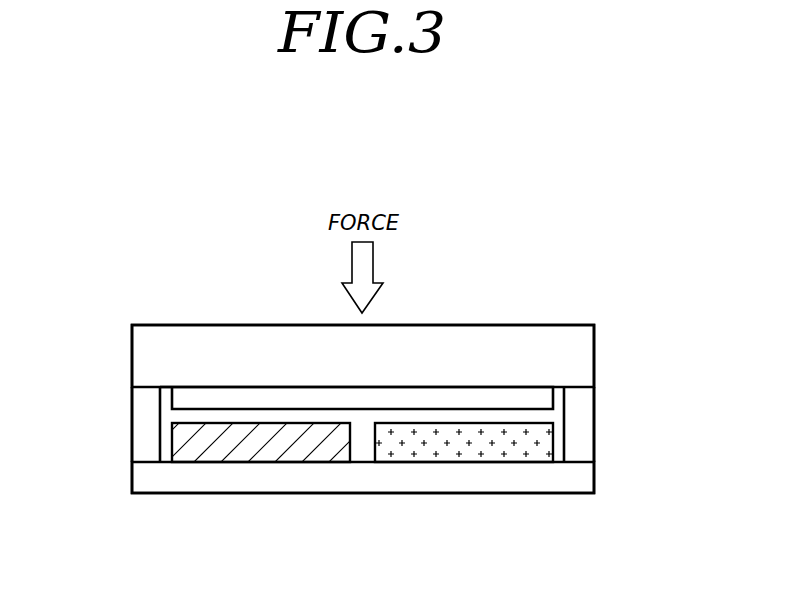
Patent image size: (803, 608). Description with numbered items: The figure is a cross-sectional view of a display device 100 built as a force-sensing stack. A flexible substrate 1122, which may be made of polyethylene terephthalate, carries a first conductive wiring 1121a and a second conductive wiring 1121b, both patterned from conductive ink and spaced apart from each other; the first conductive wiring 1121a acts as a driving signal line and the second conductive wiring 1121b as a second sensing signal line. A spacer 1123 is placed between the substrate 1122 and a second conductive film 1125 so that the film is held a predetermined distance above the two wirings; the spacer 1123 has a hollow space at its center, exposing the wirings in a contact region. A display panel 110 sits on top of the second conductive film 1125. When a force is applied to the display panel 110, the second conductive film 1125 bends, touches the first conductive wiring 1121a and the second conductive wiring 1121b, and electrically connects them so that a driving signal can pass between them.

The display device 100 is at (568, 227).
The display panel 110 is at (585, 351).
The spacer 1123 is at (143, 403).
The second conductive film 1125 is at (183, 398).
The first conductive wiring 1121a is at (179, 442).
The second conductive wiring 1121b is at (545, 436).
The substrate 1122 is at (362, 485).